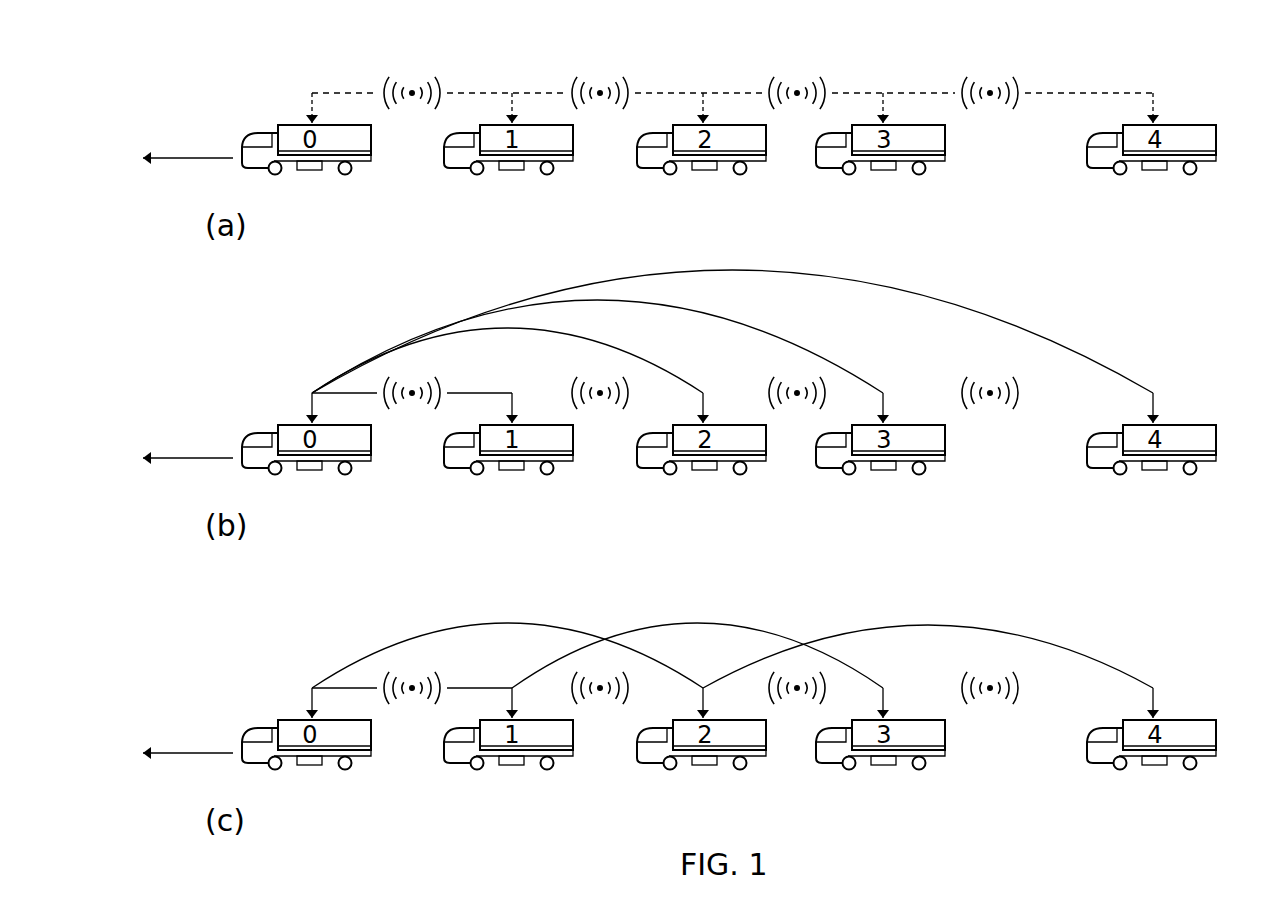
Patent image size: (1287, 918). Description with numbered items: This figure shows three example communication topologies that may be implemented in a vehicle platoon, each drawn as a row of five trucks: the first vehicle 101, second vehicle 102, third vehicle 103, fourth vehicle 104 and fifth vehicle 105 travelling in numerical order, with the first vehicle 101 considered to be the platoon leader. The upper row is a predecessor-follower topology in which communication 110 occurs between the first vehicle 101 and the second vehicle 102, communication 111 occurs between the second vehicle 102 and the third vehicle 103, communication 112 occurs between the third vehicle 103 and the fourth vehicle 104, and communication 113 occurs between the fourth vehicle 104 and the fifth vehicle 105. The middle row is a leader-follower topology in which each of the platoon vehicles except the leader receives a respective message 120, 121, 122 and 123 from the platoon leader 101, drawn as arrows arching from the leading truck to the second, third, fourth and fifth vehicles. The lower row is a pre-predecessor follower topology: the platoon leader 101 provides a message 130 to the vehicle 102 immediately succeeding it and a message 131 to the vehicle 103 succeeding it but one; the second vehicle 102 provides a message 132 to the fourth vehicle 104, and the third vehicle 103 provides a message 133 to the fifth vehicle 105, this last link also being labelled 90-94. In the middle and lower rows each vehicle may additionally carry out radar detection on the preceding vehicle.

The first vehicle 101 is at (296, 131).
The second vehicle 102 is at (523, 138).
The third vehicle 103 is at (716, 138).
The fourth vehicle 104 is at (895, 138).
The fifth vehicle 105 is at (1193, 140).
The communication 110 is at (415, 80).
The communication 111 is at (603, 80).
The communication 112 is at (800, 80).
The communication 113 is at (991, 80).
The message 120 is at (512, 391).
The message 121 is at (676, 370).
The message 122 is at (855, 335).
The message 123 is at (1090, 345).
The message 130 is at (470, 688).
The message 131 is at (530, 605).
The message 132 is at (708, 625).
The message 133 is at (1100, 656).
The communication links 90-94 is at (934, 608).